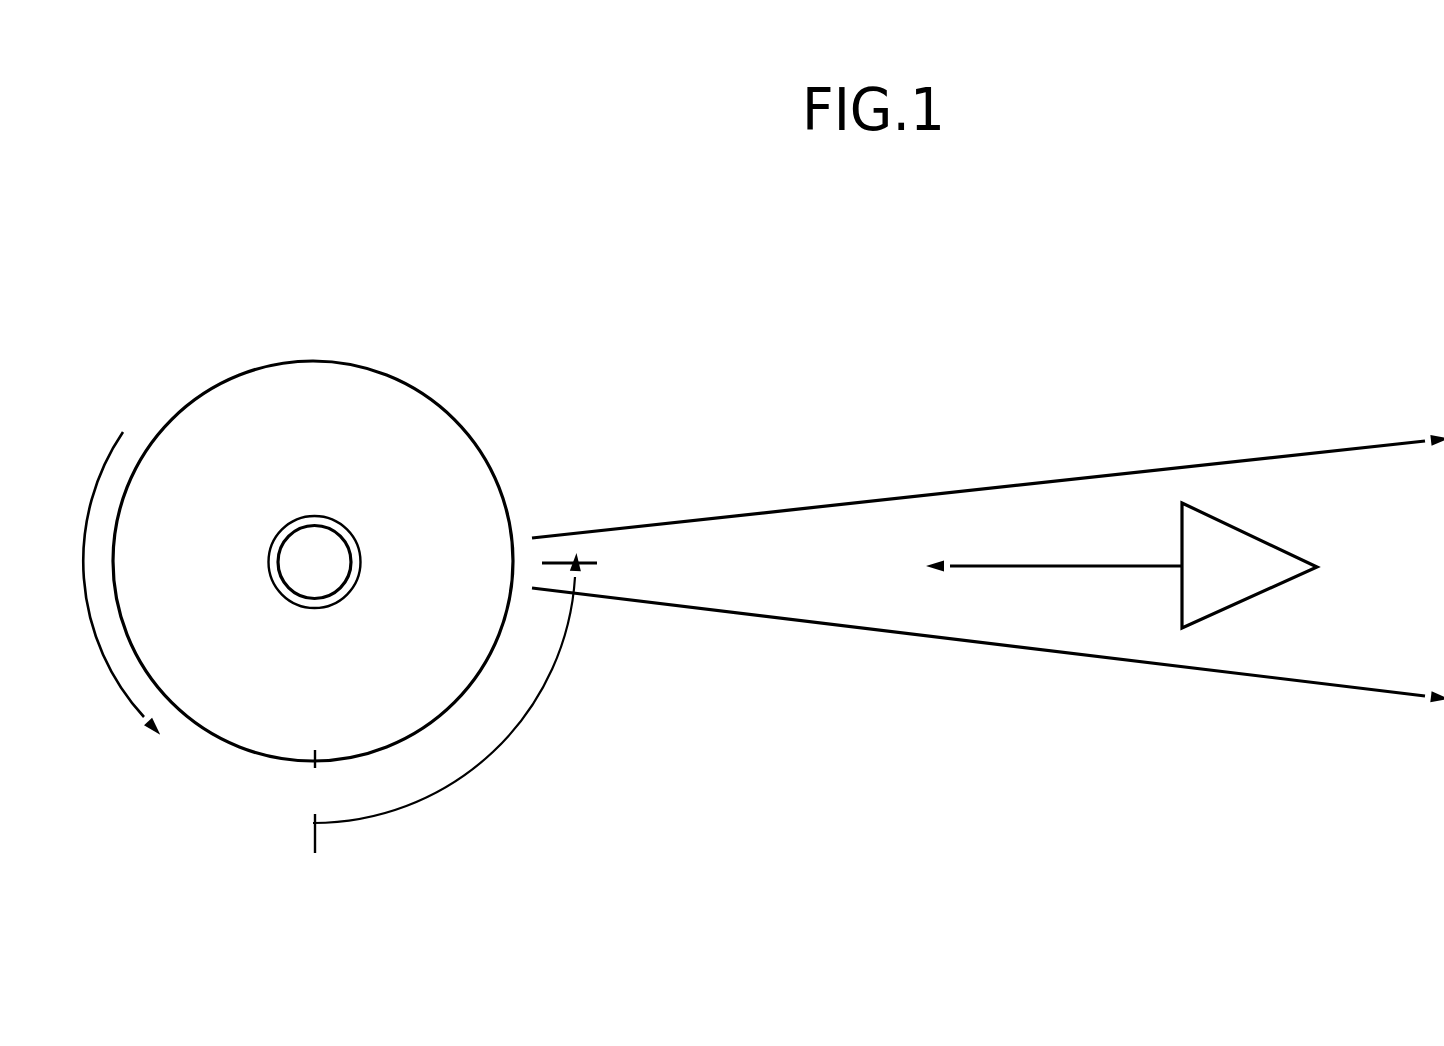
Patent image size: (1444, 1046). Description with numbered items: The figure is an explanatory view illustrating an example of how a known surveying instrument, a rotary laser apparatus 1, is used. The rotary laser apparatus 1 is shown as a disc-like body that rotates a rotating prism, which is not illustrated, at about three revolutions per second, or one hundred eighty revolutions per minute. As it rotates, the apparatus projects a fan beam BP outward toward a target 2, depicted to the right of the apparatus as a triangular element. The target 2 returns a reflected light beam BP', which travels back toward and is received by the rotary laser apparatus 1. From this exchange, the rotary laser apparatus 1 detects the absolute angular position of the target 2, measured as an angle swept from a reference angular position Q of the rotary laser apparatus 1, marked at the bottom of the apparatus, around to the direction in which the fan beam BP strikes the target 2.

The rotary laser apparatus 1 is at (483, 430).
The target 2 is at (1245, 551).
The fan beam BP is at (978, 555).
The reflected light beam BP' is at (1066, 543).
The reference angular position Q is at (314, 801).